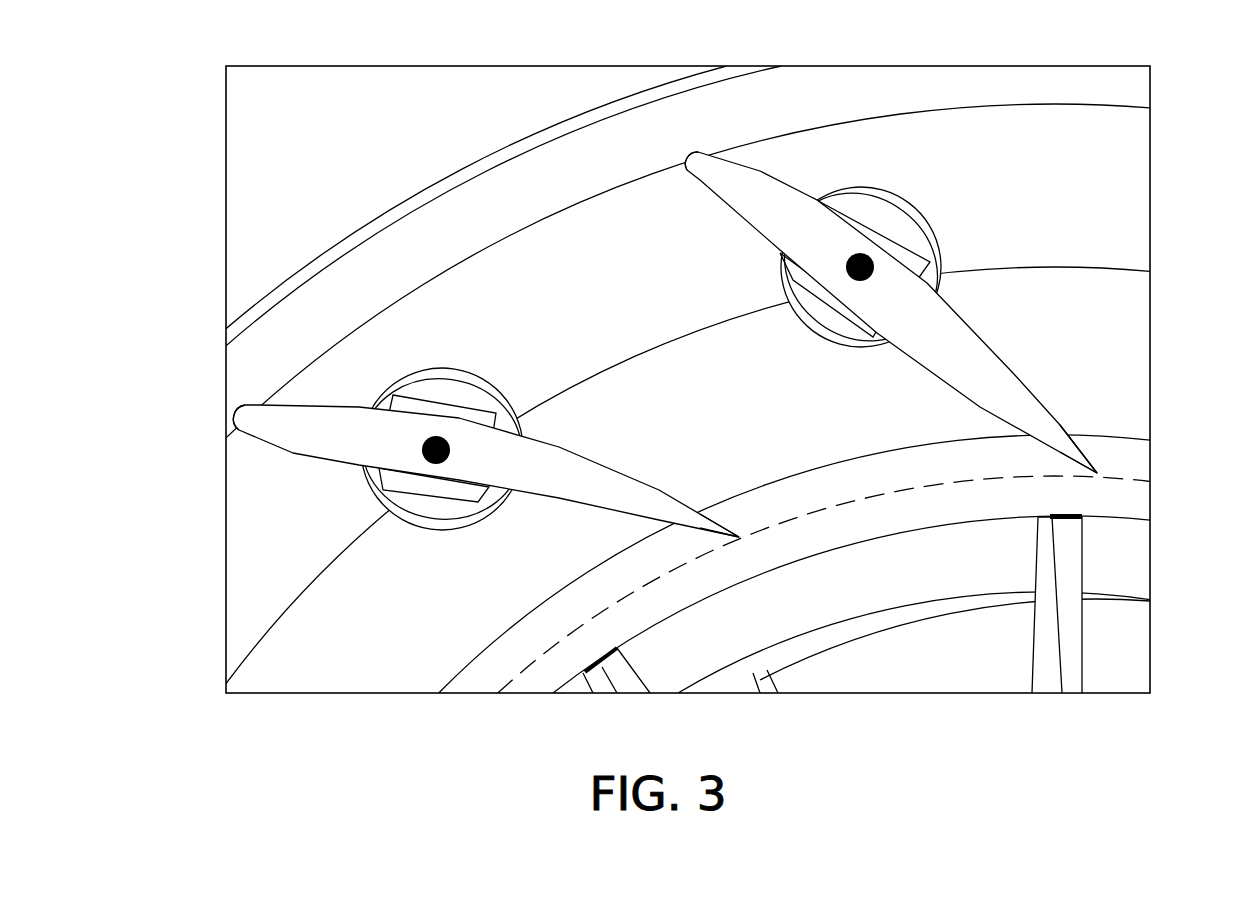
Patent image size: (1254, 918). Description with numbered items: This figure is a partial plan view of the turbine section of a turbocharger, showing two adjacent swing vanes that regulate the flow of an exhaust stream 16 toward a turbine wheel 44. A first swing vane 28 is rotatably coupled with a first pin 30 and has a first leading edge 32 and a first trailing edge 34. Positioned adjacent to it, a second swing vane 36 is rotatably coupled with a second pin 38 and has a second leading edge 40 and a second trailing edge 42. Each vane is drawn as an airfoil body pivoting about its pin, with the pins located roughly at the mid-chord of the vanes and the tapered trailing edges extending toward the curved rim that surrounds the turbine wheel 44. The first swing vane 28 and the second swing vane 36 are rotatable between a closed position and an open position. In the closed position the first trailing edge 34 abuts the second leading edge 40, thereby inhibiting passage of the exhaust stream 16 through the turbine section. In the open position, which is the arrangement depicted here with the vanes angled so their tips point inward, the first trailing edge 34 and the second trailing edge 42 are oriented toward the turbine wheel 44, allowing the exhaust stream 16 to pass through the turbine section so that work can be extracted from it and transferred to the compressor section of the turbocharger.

The exhaust stream 16 is at (651, 356).
The first swing vane 28 is at (283, 418).
The first pin 30 is at (438, 434).
The first leading edge 32 is at (240, 413).
The first trailing edge 34 is at (740, 538).
The second swing vane 36 is at (744, 182).
The second pin 38 is at (861, 253).
The second leading edge 40 is at (688, 158).
The second trailing edge 42 is at (1102, 471).
The turbine wheel 44 is at (1067, 630).